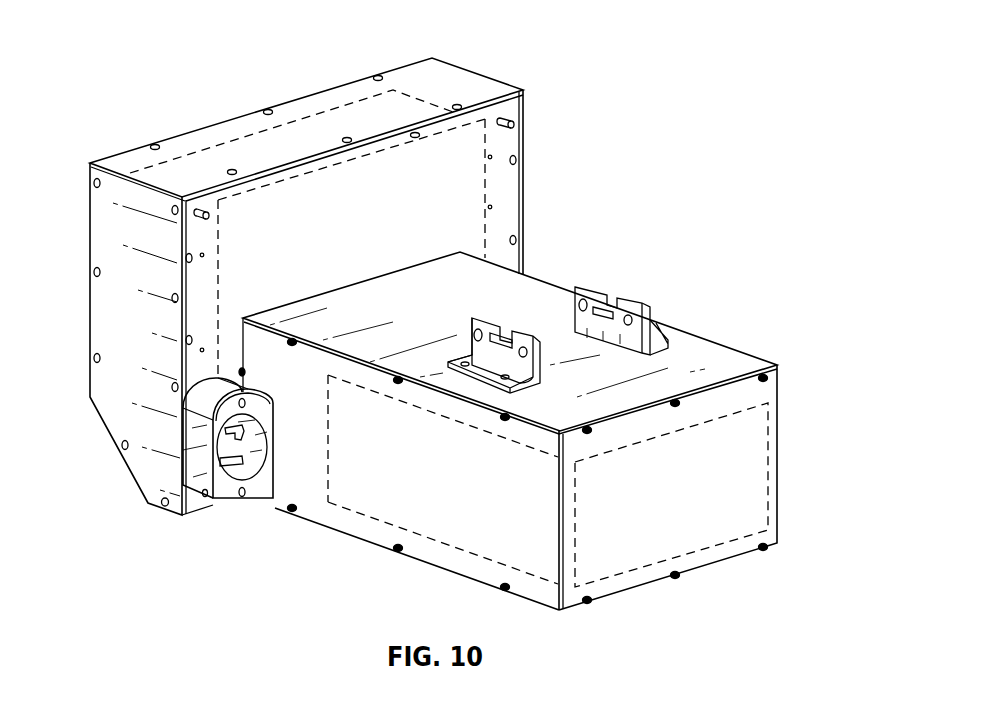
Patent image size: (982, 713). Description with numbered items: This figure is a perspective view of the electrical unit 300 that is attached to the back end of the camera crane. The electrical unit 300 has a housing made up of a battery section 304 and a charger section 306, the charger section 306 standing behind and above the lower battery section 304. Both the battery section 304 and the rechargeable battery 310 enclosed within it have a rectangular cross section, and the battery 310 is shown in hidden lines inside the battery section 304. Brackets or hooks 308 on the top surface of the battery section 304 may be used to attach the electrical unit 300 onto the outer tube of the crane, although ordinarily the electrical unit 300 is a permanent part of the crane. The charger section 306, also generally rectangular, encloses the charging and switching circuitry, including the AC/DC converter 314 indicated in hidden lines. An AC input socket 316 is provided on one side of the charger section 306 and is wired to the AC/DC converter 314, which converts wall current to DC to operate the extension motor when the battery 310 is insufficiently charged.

The electrical unit 300 is at (630, 94).
The battery section 304 is at (739, 337).
The charger section 306 is at (528, 221).
The brackets or hooks 308 is at (588, 295).
The rechargeable battery 310 is at (683, 530).
The AC/DC converter 314 is at (355, 117).
The AC input socket 316 is at (237, 480).